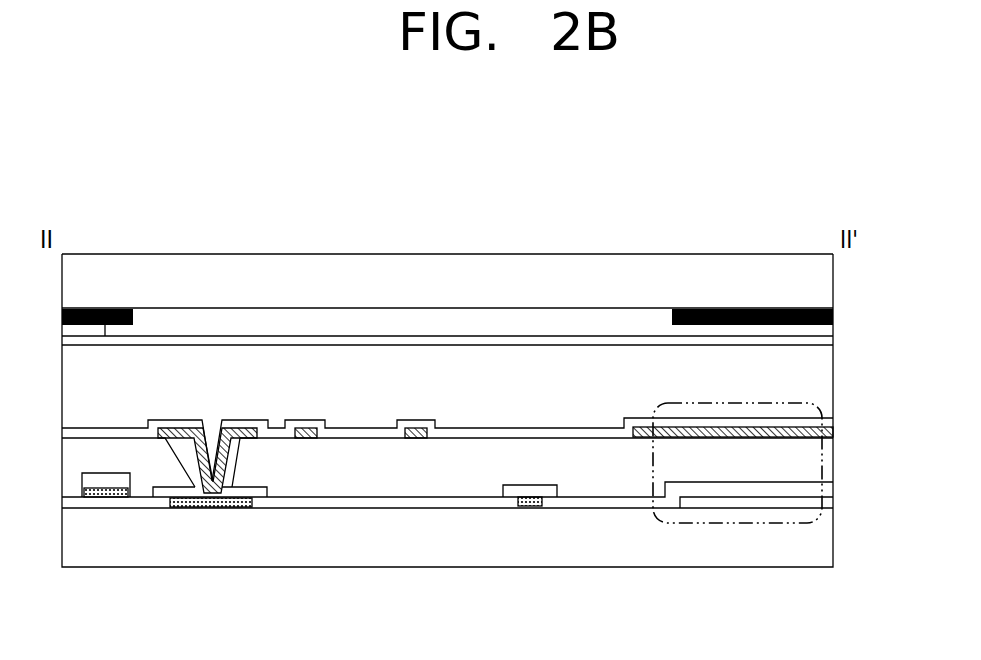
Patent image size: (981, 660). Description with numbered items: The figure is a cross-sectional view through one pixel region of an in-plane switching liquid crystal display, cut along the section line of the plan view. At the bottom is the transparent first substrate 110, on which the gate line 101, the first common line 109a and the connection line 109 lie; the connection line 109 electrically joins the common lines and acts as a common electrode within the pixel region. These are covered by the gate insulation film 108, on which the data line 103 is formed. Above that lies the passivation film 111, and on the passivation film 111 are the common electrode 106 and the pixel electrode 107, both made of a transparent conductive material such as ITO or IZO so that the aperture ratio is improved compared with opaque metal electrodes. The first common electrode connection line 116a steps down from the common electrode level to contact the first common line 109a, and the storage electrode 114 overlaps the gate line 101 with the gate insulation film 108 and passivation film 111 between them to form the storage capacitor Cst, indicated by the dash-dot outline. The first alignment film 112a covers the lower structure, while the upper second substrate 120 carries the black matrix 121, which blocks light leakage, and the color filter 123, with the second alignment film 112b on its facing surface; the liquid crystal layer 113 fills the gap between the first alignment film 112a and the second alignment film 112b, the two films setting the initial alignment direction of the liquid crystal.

The second substrate 120 is at (493, 260).
The color filter 123 is at (580, 315).
The black matrix 121 is at (737, 336).
The second alignment film 112b is at (822, 341).
The liquid crystal layer 113 is at (822, 378).
The storage electrode 114 is at (822, 432).
The passivation film 111 is at (820, 460).
The gate line 101 is at (822, 498).
The first substrate 110 is at (822, 542).
The data line 103 is at (105, 483).
The first common electrode connection line 116a is at (162, 440).
The first common line 109a is at (213, 497).
The common electrode 106 is at (302, 440).
The pixel electrode 107 is at (413, 440).
The first alignment film 112a is at (468, 436).
The connection line 109 is at (528, 506).
The gate insulation film 108 is at (608, 500).
The storage capacitor Cst is at (737, 523).